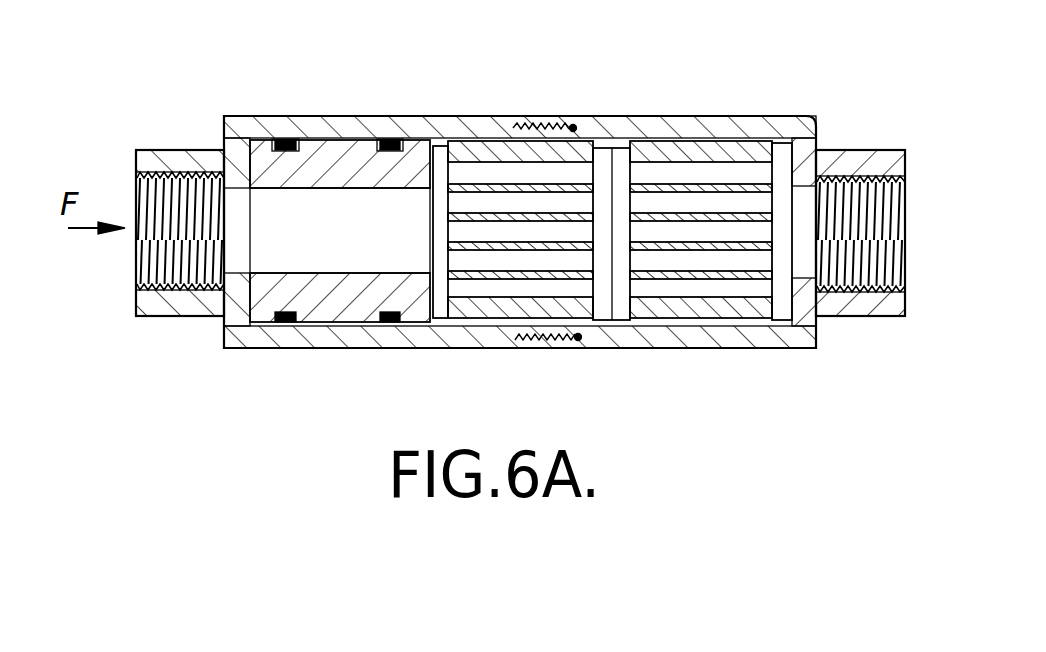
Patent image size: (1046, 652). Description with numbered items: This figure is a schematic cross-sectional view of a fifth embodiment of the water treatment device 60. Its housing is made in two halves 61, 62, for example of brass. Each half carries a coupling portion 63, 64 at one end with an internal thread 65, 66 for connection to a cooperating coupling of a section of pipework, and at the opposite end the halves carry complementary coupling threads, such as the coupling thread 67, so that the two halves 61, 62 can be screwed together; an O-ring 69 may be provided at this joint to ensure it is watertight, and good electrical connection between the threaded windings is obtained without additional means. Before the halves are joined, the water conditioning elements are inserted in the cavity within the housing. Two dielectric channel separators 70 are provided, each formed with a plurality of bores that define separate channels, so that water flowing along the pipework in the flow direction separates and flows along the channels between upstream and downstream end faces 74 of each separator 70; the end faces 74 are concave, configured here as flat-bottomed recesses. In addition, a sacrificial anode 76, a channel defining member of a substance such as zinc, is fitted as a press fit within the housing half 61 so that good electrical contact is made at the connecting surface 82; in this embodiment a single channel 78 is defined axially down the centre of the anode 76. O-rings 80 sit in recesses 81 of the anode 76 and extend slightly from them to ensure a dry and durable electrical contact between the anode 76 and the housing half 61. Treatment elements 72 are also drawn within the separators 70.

The water treatment device 60 is at (305, 98).
The housing half 61 is at (452, 117).
The housing half 62 is at (782, 116).
The coupling portion 63 is at (165, 150).
The coupling portion 64 is at (845, 157).
The internal thread 65 is at (167, 178).
The internal thread 66 is at (877, 193).
The coupling thread 67 is at (540, 122).
The O-ring 69 is at (576, 128).
The dielectric channel separator 70 is at (497, 313).
The treatment elements 72 is at (563, 233).
The end face 74 is at (440, 294).
The sacrificial anode 76 is at (337, 303).
The flow bore 78 is at (280, 257).
The O-ring 80 is at (285, 140).
The recess 81 is at (226, 148).
The connecting surface 82 is at (368, 322).